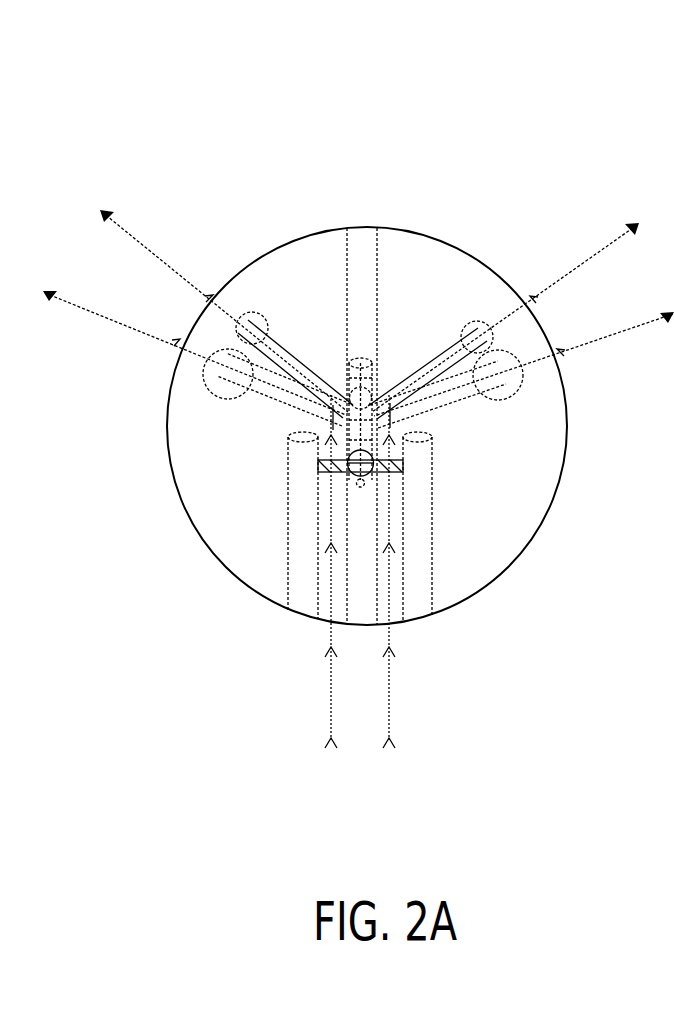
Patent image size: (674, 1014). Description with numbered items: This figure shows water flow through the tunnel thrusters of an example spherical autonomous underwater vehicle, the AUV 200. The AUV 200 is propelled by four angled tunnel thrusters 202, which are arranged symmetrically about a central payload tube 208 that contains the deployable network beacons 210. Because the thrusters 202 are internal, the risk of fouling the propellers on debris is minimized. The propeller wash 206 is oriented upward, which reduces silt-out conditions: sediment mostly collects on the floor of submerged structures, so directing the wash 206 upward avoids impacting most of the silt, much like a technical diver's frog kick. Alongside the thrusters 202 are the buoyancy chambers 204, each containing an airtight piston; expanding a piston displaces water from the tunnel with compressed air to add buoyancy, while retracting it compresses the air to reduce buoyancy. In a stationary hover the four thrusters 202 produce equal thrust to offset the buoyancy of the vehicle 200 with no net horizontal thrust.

The autonomous underwater vehicle 200 is at (106, 97).
The tunnel thrusters 202 is at (380, 456).
The buoyancy chambers 204 is at (290, 552).
The propeller wash 206 is at (391, 756).
The central payload tube 208 is at (377, 282).
The deployable network beacons 210 is at (369, 363).